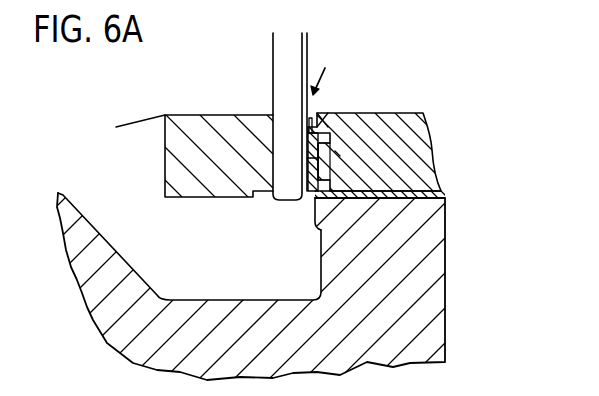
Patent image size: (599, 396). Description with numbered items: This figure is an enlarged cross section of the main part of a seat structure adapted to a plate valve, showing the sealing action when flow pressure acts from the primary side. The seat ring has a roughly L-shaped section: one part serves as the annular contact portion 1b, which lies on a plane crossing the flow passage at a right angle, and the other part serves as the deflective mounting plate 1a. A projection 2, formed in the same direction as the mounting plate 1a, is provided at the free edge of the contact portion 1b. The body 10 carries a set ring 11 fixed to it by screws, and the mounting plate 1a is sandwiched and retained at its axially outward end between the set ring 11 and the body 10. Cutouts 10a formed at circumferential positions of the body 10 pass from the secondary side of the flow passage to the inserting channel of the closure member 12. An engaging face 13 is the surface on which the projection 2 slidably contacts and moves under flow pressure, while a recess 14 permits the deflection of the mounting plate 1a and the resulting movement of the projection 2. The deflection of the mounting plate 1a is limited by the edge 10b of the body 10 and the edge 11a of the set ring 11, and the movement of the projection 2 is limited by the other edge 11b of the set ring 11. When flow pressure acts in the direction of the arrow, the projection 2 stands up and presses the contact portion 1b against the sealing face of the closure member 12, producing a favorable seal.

The body 10 is at (258, 350).
The cutouts 10a is at (236, 266).
The edge 10b is at (324, 212).
The set ring 11 is at (394, 168).
The edge 11a is at (307, 177).
The other edge 11b is at (318, 140).
The closure member 12 is at (287, 53).
The engaging face 13 is at (333, 153).
The recess 14 is at (305, 137).
The mounting plate 1a is at (368, 193).
The contact portion 1b is at (307, 160).
The projection 2 is at (331, 152).